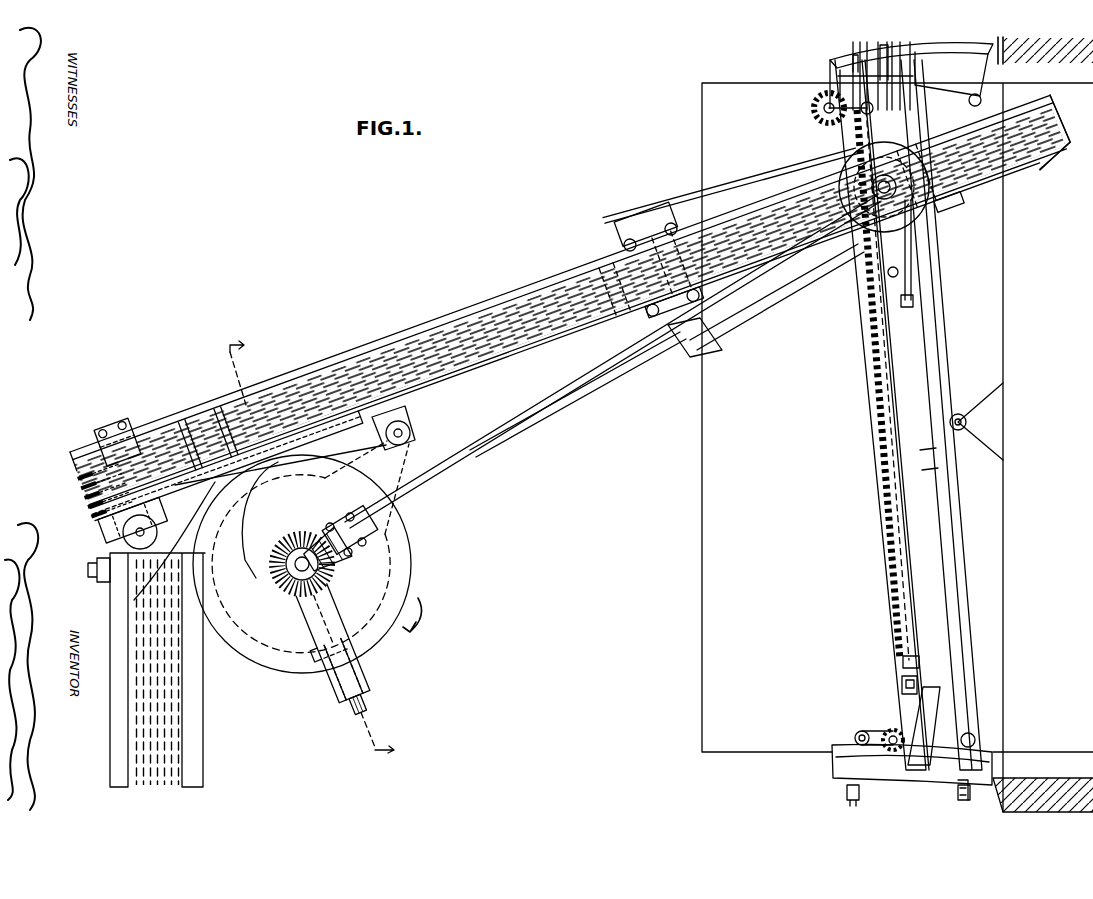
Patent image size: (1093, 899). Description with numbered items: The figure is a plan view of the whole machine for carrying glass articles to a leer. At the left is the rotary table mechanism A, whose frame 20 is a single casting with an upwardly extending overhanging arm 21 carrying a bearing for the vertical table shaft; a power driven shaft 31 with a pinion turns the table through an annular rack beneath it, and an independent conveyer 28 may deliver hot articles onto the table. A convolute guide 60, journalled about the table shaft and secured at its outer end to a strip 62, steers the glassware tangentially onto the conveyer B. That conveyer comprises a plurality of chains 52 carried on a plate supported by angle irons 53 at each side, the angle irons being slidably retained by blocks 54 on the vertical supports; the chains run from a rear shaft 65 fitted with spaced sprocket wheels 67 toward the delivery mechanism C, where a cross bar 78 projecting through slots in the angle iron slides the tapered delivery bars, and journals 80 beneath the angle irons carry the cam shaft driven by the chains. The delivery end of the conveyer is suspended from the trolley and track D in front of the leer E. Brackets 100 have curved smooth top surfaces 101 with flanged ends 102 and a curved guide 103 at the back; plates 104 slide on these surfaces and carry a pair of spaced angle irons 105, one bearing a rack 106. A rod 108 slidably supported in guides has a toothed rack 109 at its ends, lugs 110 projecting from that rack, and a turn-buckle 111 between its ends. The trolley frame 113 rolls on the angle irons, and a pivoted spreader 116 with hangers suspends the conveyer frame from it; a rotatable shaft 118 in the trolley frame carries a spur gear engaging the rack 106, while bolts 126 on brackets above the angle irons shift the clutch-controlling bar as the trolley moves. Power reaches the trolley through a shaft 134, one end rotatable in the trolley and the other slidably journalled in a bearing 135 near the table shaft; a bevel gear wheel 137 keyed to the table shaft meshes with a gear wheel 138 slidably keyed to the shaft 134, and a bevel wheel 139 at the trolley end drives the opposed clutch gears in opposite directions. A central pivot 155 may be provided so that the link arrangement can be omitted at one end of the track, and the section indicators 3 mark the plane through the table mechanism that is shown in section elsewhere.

The section line 3- 3 is at (321, 542).
The frame 20 is at (362, 677).
The overhanging arm 21 is at (334, 611).
The independent conveyer 28 is at (173, 698).
The power driven shaft 31 is at (365, 708).
The chains 52 is at (478, 326).
The angle irons 53 is at (558, 270).
The blocks 54 is at (368, 326).
The convolute guide 60 is at (258, 526).
The strip 62 is at (408, 441).
The rear shaft 65 is at (80, 486).
The sprocket wheels 67 is at (96, 514).
The cross bar 78 is at (983, 186).
The journals 80 is at (627, 246).
The brackets 100 is at (922, 52).
The curved top surfaces 101 is at (912, 418).
The flanged ends 102 is at (838, 78).
The curved guide 103 is at (854, 58).
The plates 104 is at (957, 750).
The angle irons 105 is at (910, 537).
The rack 106 is at (880, 555).
The rod 108 is at (906, 663).
The toothed rack 109 is at (903, 696).
The lugs 110 is at (933, 693).
The turn-buckle 111 is at (877, 427).
The trolley frame 113 is at (853, 153).
The spreader 116 is at (1025, 795).
The rotatable shaft 118 is at (947, 207).
The bolts 126 is at (882, 57).
The shaft 134 is at (547, 406).
The bearing 135 is at (374, 530).
The bevel gear wheel 137 is at (300, 600).
The gear wheel 138 is at (338, 560).
The bevel wheel 139 is at (774, 292).
The central pivot 155 is at (959, 413).
The rotary table A is at (368, 588).
The conveyer B is at (451, 311).
The delivery mechanism C is at (1037, 148).
The trolley and track D is at (907, 227).
The leer E is at (897, 447).